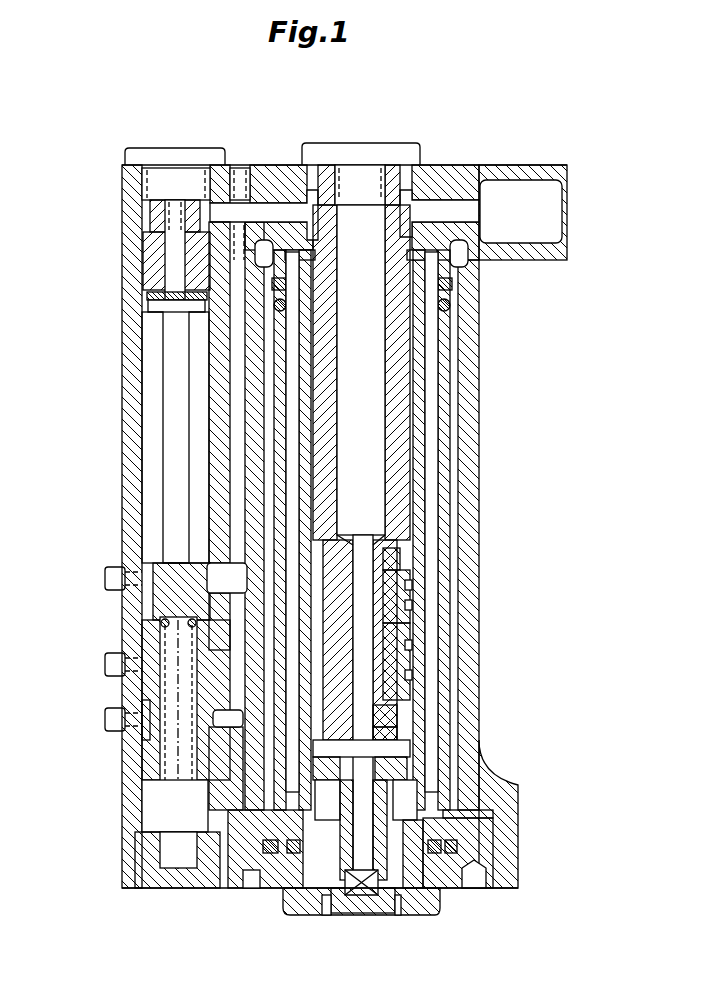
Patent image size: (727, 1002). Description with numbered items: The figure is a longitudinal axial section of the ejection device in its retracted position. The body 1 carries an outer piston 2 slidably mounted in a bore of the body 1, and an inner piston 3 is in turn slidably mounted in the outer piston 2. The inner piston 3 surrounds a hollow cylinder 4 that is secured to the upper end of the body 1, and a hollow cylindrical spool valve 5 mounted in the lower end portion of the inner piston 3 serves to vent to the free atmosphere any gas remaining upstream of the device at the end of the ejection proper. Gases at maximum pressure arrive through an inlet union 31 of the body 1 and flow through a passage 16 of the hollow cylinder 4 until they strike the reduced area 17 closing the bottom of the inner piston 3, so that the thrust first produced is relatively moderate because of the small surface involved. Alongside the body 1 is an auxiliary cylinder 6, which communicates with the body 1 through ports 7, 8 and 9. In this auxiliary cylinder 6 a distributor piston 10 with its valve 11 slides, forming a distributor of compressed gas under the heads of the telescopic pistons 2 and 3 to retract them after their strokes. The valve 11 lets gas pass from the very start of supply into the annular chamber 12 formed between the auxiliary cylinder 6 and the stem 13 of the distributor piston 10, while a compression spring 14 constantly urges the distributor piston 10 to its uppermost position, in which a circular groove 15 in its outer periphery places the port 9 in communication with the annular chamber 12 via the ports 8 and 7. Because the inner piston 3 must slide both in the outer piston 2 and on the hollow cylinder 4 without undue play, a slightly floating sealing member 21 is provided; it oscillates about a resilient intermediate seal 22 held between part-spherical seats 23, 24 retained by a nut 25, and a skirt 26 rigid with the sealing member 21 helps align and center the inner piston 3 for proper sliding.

The body 1 is at (465, 310).
The outer piston 2 is at (440, 382).
The inner piston 3 is at (415, 488).
The hollow cylinder 4 is at (397, 420).
The hollow cylindrical spool valve 5 is at (348, 908).
The auxiliary cylinder 6 is at (130, 258).
The port 7 is at (233, 575).
The port 8 is at (230, 672).
The port 9 is at (228, 718).
The distributor piston 10 is at (150, 617).
The valve 11 is at (147, 295).
The annular chamber 12 is at (150, 358).
The stem 13 is at (170, 450).
The compression spring 14 is at (137, 850).
The circular groove 15 is at (147, 712).
The passage 16 is at (352, 238).
The reduced area 17 is at (418, 893).
The sealing member 21 is at (395, 657).
The resilient intermediate seal 22 is at (410, 628).
The part-spherical seat 23 is at (397, 557).
The part-spherical seat 24 is at (390, 707).
The nut 25 is at (390, 732).
The skirt 26 is at (250, 870).
The inlet union 31 is at (500, 197).